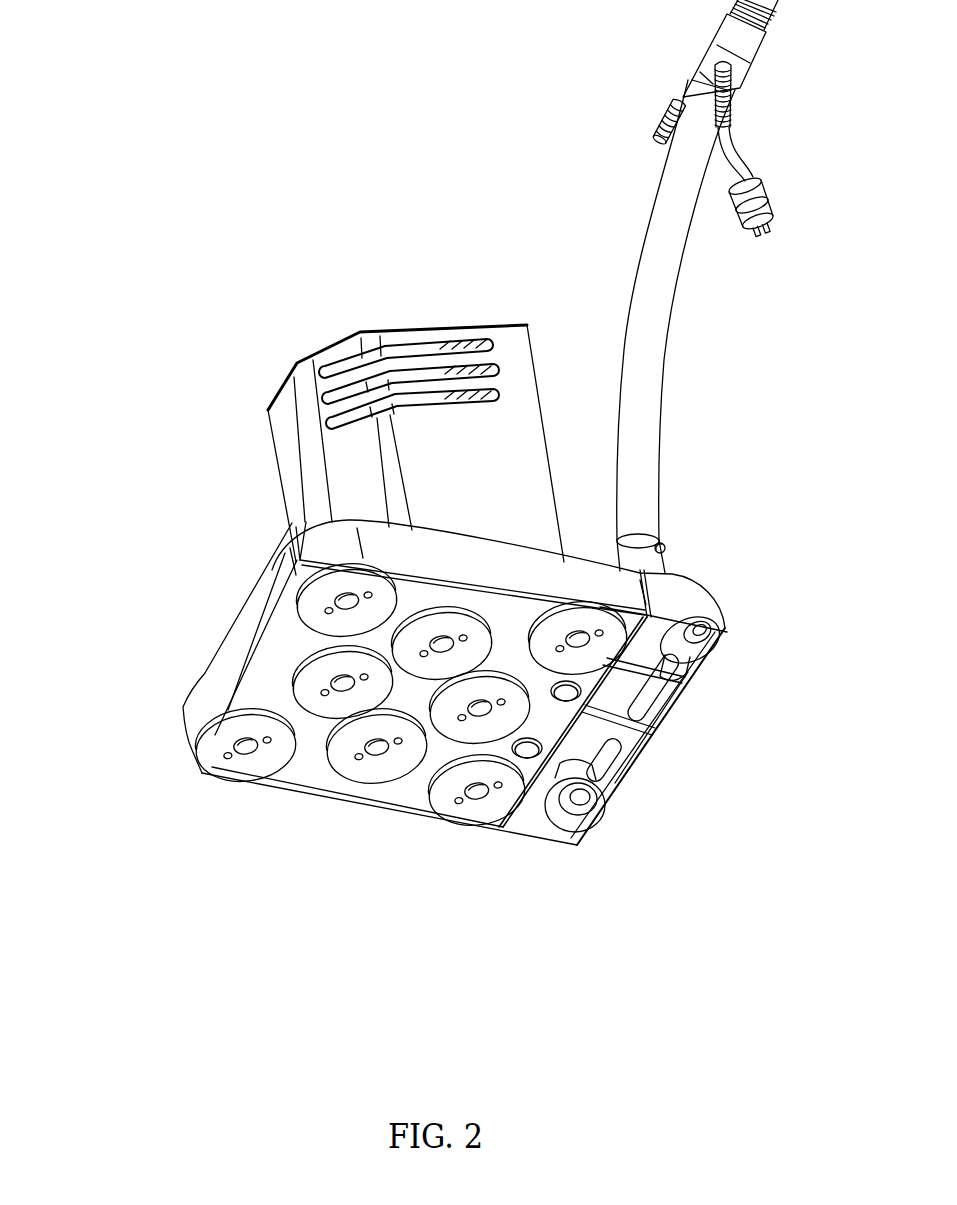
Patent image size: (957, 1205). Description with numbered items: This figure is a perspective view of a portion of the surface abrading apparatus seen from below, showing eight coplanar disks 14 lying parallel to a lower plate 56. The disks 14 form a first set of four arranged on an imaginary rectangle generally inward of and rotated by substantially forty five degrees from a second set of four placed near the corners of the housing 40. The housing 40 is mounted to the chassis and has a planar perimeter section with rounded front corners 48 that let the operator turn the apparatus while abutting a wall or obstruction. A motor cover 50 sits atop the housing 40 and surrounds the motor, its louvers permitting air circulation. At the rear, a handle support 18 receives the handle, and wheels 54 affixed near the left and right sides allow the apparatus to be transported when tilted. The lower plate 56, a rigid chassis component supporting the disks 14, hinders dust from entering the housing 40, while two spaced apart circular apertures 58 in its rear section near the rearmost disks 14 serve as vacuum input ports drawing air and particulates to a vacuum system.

The disks 14 is at (232, 765).
The handle support 18 is at (657, 562).
The housing 40 is at (410, 553).
The rounded front corners 48 is at (318, 545).
The motor cover 50 is at (503, 350).
The wheels 54 is at (695, 650).
The lower plate 56 is at (263, 686).
The apertures 58 is at (570, 694).